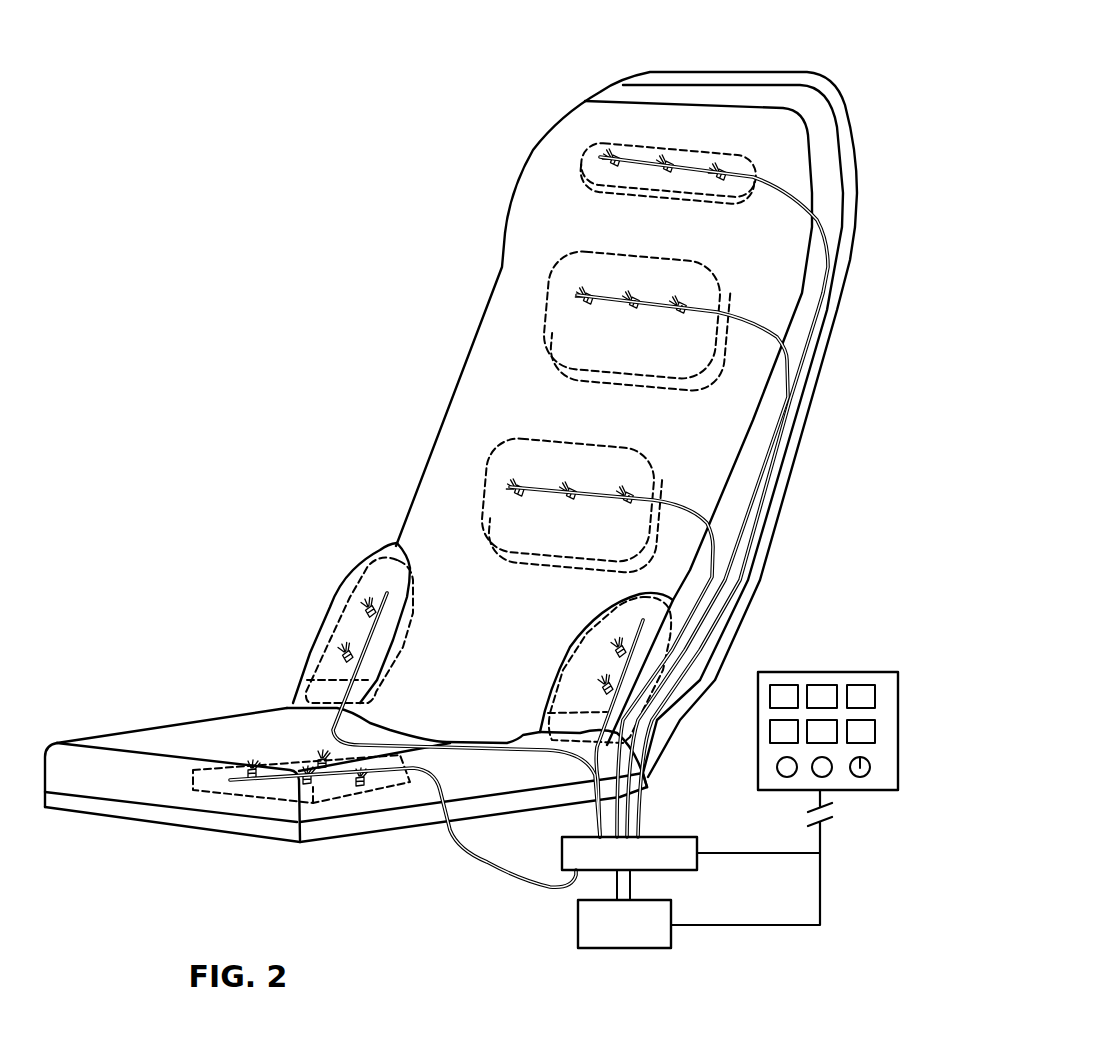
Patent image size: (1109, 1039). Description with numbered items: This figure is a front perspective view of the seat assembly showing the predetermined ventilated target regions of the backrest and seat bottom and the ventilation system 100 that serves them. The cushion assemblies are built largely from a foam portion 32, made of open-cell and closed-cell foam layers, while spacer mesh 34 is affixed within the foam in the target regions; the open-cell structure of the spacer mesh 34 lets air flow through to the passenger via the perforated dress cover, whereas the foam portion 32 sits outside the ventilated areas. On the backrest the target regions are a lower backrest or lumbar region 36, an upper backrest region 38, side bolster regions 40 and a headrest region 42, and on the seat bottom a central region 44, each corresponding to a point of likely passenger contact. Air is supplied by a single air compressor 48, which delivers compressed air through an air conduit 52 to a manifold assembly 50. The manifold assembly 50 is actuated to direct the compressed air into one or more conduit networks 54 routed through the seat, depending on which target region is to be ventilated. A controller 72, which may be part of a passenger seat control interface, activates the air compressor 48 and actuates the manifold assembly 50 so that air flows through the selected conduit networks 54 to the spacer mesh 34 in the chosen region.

The foam portion 32 is at (483, 403).
The spacer mesh 34 is at (595, 168).
The lower backrest or lumbar region 36 is at (655, 487).
The upper backrest region 38 is at (725, 297).
The side bolster regions 40 is at (667, 640).
The headrest region 42 is at (748, 168).
The central region 44 is at (280, 798).
The air compressor 48 is at (617, 950).
The manifold assembly 50 is at (670, 837).
The air conduit 52 is at (633, 882).
The conduit networks 54 is at (640, 817).
The controller 72 is at (902, 713).
The ventilation system 100 is at (759, 966).